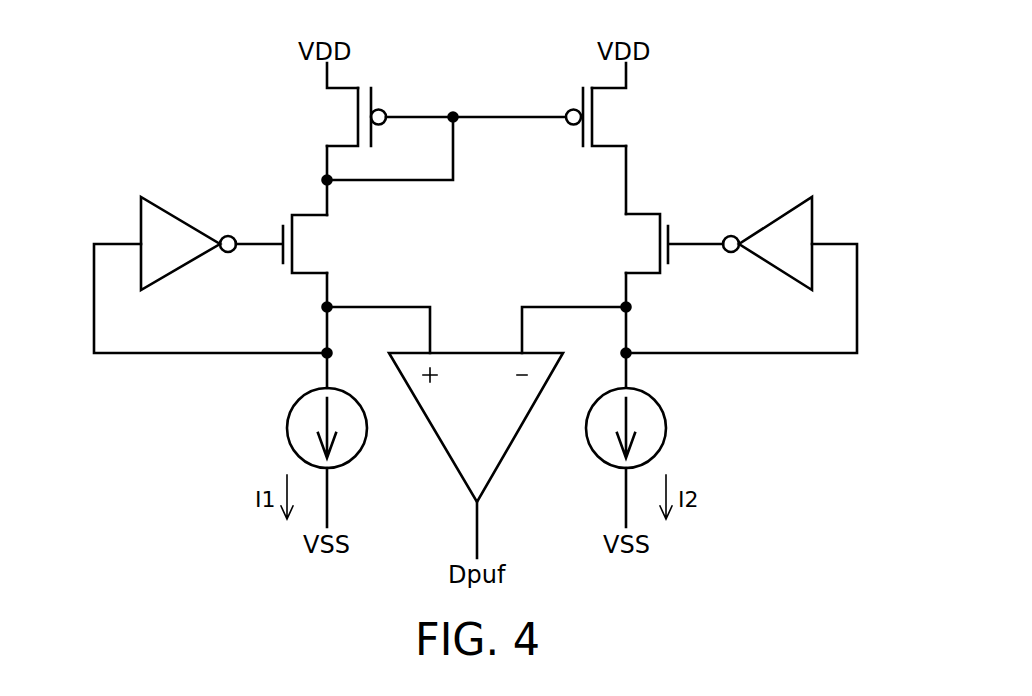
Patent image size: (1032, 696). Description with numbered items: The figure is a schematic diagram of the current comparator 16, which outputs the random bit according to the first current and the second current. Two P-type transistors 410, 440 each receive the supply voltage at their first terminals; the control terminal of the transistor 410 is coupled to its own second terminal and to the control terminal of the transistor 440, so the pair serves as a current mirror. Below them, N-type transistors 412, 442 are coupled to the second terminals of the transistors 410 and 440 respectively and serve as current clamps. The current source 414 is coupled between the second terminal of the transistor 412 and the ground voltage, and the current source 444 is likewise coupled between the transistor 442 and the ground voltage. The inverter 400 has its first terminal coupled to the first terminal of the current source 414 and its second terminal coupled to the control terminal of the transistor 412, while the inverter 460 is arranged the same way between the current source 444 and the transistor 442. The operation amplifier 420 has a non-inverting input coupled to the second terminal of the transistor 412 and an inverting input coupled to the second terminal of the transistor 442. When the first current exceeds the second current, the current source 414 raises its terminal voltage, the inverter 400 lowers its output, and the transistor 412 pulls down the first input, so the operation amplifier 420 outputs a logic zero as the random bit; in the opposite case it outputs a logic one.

The current comparator 16 is at (787, 78).
The inverter 400 is at (185, 216).
The transistor 410 is at (346, 146).
The transistor 412 is at (328, 273).
The current source 414 is at (287, 427).
The operation amplifier 420 is at (516, 440).
The transistor 440 is at (611, 146).
The transistor 442 is at (640, 272).
The current source 444 is at (667, 425).
The inverter 460 is at (770, 216).